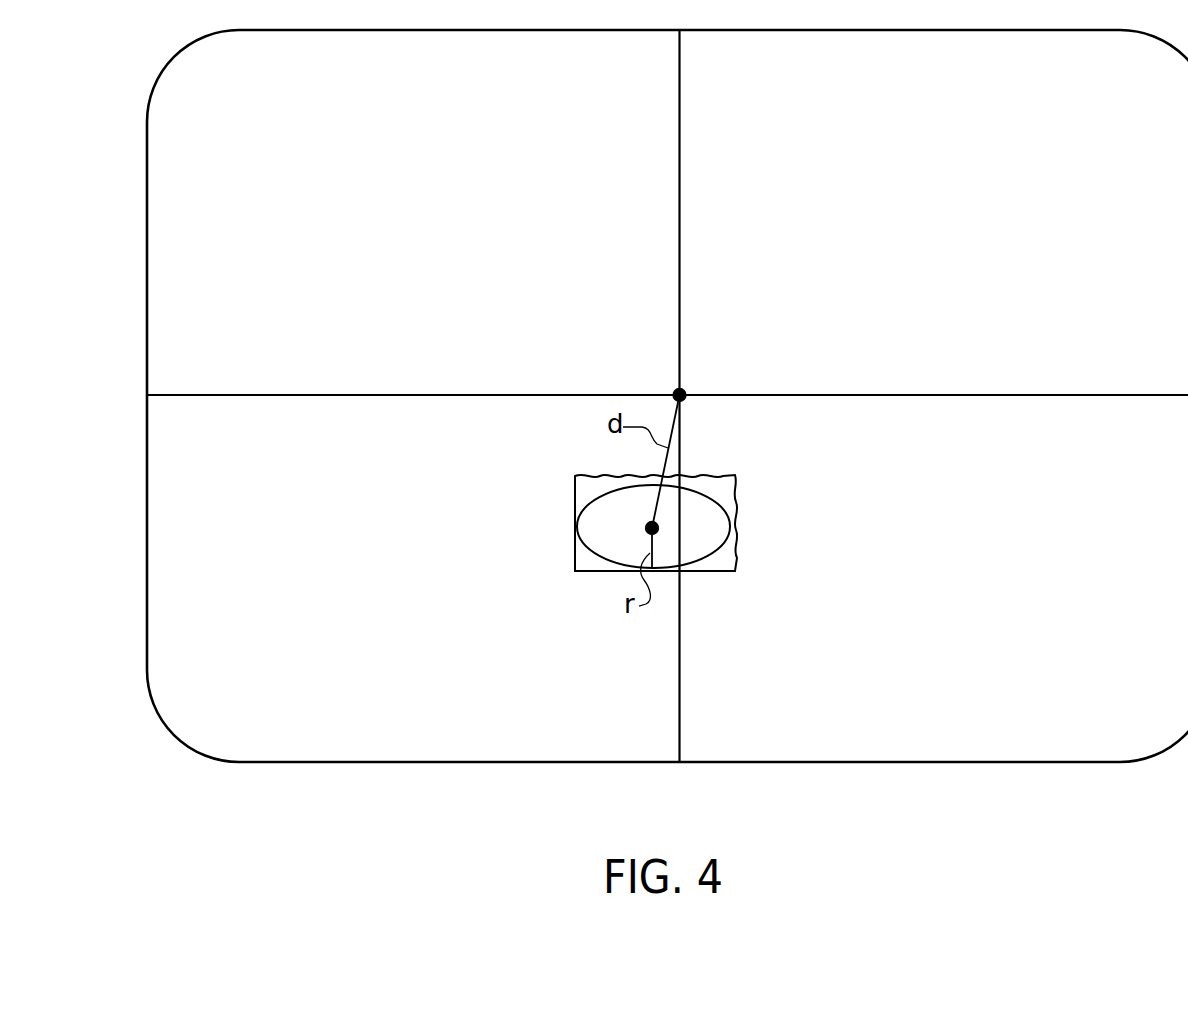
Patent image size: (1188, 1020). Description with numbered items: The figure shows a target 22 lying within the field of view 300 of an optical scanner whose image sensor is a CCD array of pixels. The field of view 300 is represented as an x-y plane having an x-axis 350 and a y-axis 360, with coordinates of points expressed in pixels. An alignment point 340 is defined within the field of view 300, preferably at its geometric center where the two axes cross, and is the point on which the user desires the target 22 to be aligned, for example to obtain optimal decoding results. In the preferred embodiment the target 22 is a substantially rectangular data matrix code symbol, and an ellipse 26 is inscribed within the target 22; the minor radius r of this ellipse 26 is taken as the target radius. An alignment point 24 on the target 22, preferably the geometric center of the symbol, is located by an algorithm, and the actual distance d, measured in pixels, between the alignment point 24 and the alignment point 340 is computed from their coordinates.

The field of view 300 is at (667, 396).
The y-axis 360 is at (680, 218).
The x-axis 350 is at (667, 364).
The alignment point 340 is at (686, 392).
The target 22 is at (575, 503).
The ellipse 26 is at (601, 556).
The alignment point 24 is at (645, 530).